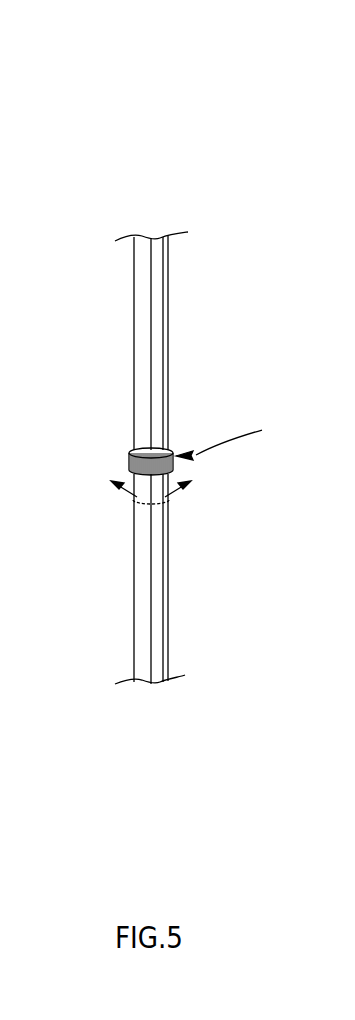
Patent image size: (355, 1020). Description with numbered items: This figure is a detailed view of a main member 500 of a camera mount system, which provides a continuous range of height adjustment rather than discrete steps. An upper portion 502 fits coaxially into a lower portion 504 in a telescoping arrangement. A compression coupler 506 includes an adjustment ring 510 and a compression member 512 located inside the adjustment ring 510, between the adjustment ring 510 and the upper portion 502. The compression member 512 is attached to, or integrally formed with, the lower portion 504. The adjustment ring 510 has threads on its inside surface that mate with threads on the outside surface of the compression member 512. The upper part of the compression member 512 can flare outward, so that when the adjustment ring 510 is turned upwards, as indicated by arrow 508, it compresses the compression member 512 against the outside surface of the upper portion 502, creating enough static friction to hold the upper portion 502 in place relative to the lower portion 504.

The main member 500 is at (276, 57).
The upper portion 502 is at (157, 315).
The lower portion 504 is at (165, 640).
The compression coupler 506 is at (246, 431).
The arrow 508 is at (150, 503).
The adjustment ring 510 is at (174, 468).
The compression member 512 is at (171, 448).